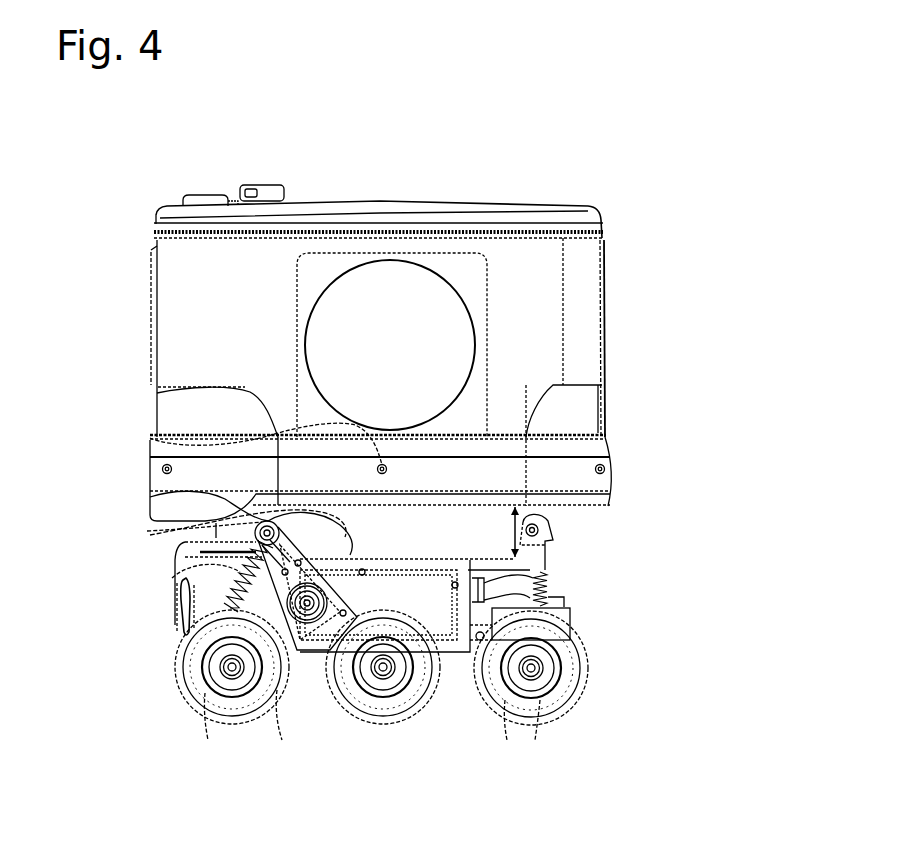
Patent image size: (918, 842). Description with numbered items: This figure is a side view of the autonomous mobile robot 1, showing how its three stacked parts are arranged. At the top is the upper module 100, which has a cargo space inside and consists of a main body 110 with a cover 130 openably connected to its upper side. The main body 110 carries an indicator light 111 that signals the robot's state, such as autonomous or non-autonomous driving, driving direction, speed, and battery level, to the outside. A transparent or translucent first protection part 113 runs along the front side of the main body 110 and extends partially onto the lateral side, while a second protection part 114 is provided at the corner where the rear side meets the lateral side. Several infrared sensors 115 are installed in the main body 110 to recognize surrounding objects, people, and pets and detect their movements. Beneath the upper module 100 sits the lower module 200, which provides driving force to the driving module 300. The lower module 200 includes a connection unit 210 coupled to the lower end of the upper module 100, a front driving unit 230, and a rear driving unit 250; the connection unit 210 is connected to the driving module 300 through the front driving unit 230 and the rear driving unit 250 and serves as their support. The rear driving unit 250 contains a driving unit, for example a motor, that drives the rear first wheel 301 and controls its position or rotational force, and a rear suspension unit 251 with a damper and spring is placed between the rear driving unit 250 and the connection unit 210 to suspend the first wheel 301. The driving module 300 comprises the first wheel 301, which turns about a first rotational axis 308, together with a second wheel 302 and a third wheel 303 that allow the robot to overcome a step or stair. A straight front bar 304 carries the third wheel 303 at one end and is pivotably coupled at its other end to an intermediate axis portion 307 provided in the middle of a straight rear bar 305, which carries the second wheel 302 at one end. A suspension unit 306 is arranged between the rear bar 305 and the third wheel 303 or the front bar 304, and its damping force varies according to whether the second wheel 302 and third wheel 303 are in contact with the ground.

The autonomous mobile robot 1 is at (572, 62).
The upper module 100 is at (646, 300).
The main body 110 is at (606, 340).
The indicator light 111 is at (598, 238).
The first protection part 113 is at (182, 402).
The second protection part 114 is at (588, 406).
The infrared sensor 115 is at (163, 468).
The cover 130 is at (491, 202).
The lower module 200 is at (592, 550).
The connection unit 210 is at (160, 496).
The front driving unit 230 is at (200, 600).
The rear driving unit 250 is at (568, 615).
The rear suspension unit 251 is at (553, 578).
The driving module 300 is at (604, 729).
The first wheel 301 is at (510, 700).
The second wheel 302 is at (383, 668).
The third wheel 303 is at (205, 695).
The front bar 304 is at (278, 690).
The rear bar 305 is at (147, 535).
The suspension unit 306 is at (176, 573).
The intermediate axis portion 307 is at (310, 640).
The first rotational axis 308 is at (531, 668).